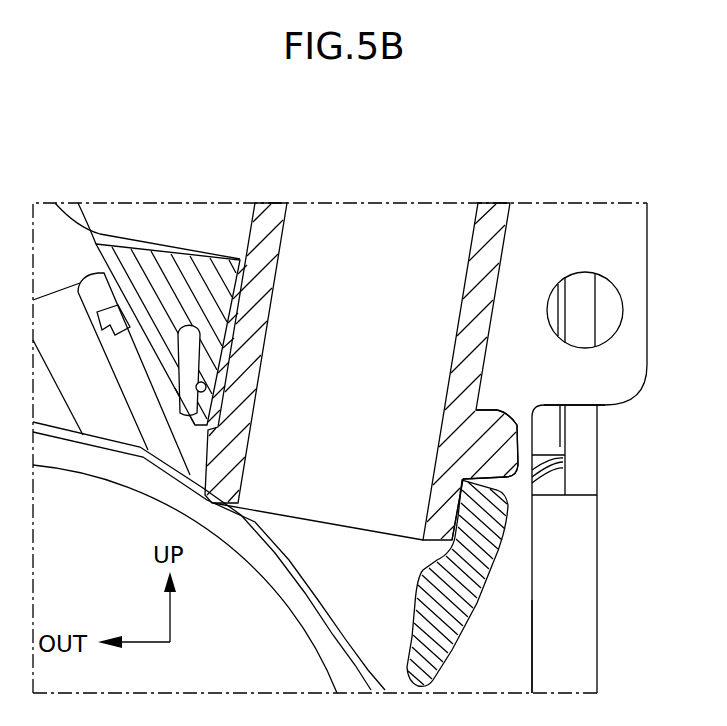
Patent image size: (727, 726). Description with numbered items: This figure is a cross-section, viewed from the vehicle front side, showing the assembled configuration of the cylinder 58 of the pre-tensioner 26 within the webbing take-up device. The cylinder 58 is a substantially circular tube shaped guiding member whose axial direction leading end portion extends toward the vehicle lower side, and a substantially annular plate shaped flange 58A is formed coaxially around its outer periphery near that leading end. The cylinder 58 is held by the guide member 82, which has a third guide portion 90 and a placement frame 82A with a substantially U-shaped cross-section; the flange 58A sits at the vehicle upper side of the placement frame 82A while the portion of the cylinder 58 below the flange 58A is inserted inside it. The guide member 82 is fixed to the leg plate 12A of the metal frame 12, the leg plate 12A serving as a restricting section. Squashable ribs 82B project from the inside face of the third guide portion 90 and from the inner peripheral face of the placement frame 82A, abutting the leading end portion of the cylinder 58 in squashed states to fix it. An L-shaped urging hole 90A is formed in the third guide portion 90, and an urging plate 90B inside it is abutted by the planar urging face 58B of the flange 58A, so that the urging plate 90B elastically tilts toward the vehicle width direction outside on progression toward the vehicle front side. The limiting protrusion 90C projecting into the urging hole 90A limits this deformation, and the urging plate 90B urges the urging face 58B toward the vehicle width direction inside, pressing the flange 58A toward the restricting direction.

The frame 12 is at (620, 404).
The leg plate 12A is at (517, 618).
The pre-tensioner 26 is at (536, 247).
The cylinder 58 is at (487, 331).
The flange 58A is at (487, 412).
The urging face 58B is at (207, 388).
The guide member 82 is at (108, 225).
The placement frame 82A is at (448, 641).
The squashable ribs 82B is at (238, 305).
The third guide portion 90 is at (95, 257).
The urging hole 90A is at (180, 352).
The urging plate 90B is at (217, 350).
The limiting protrusion 90C is at (180, 392).